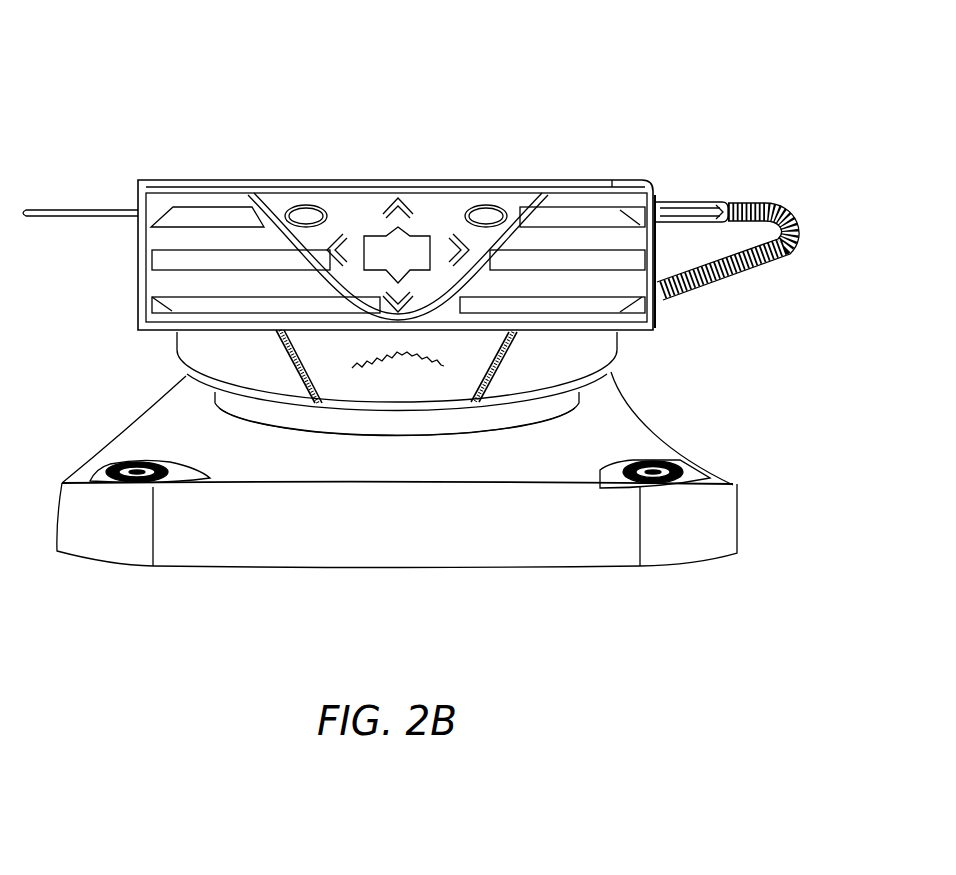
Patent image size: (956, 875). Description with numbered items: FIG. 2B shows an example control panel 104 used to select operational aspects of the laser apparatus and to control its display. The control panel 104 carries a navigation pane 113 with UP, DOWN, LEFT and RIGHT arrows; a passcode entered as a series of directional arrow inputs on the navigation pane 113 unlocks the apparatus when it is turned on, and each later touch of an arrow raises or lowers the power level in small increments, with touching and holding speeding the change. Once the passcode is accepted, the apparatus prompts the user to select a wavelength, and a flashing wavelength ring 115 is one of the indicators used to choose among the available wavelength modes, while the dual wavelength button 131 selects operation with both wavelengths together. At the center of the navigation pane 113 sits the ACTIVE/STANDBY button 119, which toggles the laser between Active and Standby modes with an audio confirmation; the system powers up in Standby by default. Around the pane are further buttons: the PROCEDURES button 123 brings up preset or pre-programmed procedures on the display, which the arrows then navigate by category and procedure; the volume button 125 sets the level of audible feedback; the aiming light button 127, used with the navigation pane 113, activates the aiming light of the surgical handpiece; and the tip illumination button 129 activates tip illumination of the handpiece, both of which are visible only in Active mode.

The control panel 104 is at (593, 108).
The navigation pane 113 is at (436, 222).
The wavelength ring 115 is at (398, 347).
The ACTIVE/STANDBY button 119 is at (406, 232).
The PROCEDURES button 123 is at (155, 217).
The volume button 125 is at (620, 218).
The aiming light button 127 is at (620, 258).
The tip illumination button 129 is at (165, 258).
The dual wavelength button 131 is at (168, 307).